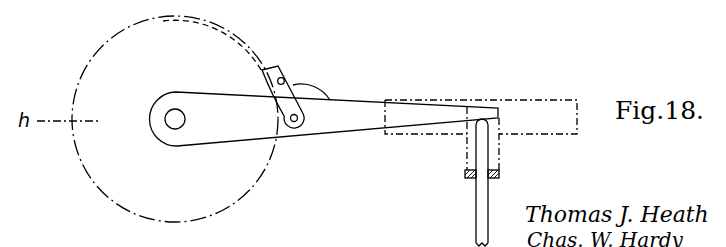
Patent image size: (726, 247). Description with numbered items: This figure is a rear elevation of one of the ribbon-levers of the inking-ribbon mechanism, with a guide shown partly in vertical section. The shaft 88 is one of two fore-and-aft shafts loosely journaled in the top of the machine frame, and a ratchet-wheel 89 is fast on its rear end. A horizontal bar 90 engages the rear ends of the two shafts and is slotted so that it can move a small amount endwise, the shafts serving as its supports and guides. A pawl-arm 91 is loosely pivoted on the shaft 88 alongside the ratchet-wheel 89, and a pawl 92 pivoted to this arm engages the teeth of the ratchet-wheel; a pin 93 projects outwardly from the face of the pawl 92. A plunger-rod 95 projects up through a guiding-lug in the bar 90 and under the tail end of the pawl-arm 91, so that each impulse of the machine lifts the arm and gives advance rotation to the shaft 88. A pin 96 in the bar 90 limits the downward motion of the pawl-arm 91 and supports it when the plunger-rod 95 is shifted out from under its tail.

The shaft 88 is at (173, 111).
The ratchet-wheel 89 is at (105, 48).
The horizontal bar 90 is at (515, 102).
The pawl-arm 91 is at (207, 100).
The pawl 92 is at (279, 72).
The pin 93 is at (285, 80).
The plunger-rod 95 is at (479, 195).
The pin 96 is at (442, 128).